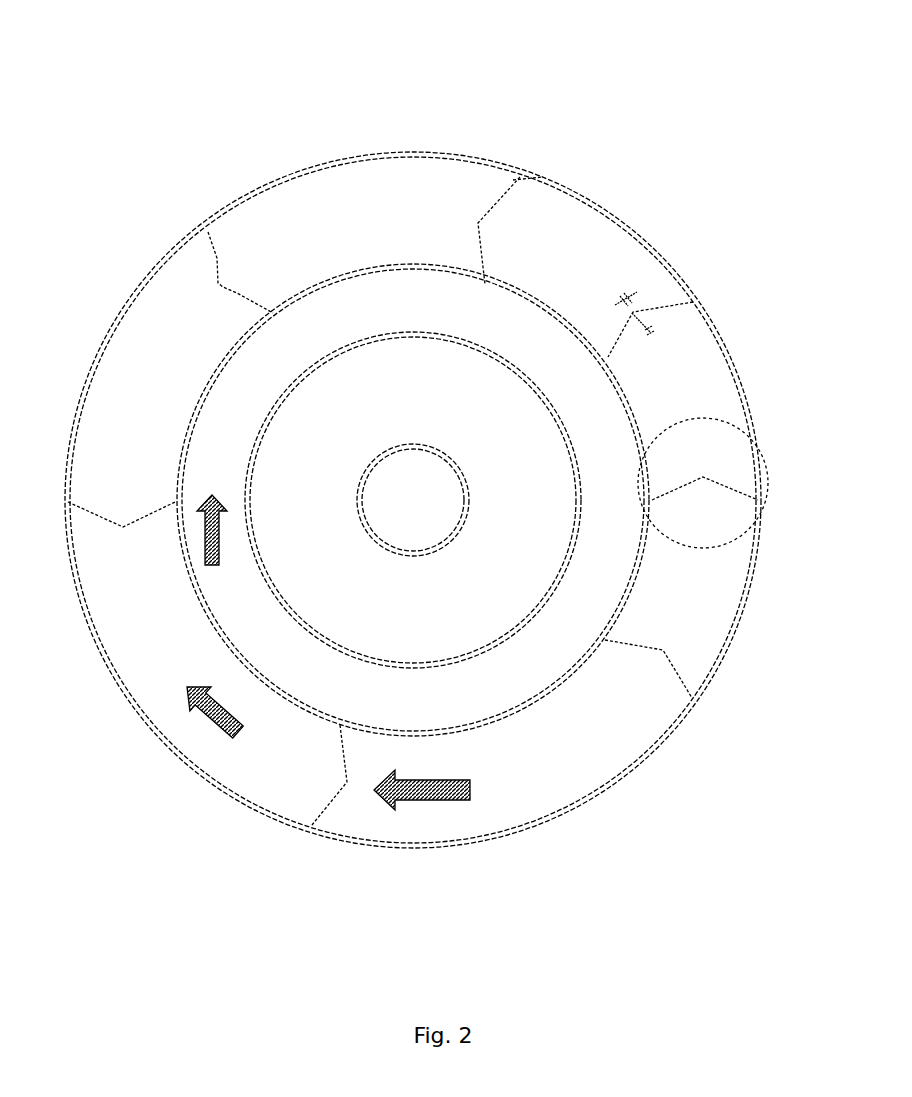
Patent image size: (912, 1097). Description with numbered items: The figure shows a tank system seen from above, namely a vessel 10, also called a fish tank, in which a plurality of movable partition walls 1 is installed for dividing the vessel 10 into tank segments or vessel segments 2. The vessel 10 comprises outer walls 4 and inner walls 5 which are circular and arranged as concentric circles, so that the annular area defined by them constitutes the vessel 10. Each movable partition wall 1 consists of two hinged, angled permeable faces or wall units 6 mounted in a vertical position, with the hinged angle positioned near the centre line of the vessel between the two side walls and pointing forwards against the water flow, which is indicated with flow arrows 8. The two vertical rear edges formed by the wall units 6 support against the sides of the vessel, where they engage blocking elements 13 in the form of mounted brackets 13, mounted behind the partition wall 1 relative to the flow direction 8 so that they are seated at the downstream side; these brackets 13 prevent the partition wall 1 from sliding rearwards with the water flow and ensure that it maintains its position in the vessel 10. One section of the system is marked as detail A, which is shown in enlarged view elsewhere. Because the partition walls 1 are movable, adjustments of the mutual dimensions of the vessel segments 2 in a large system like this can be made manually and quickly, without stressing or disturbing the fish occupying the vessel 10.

The movable partition wall 1 is at (482, 192).
The vessel segments 2 is at (285, 228).
The outer walls 4 is at (380, 157).
The inner walls 5 is at (432, 268).
The permeable faces 6 is at (215, 258).
The flow arrows 8 is at (220, 538).
The vessel 10 is at (340, 207).
The blocking elements 13 is at (550, 313).
The detail A is at (767, 460).